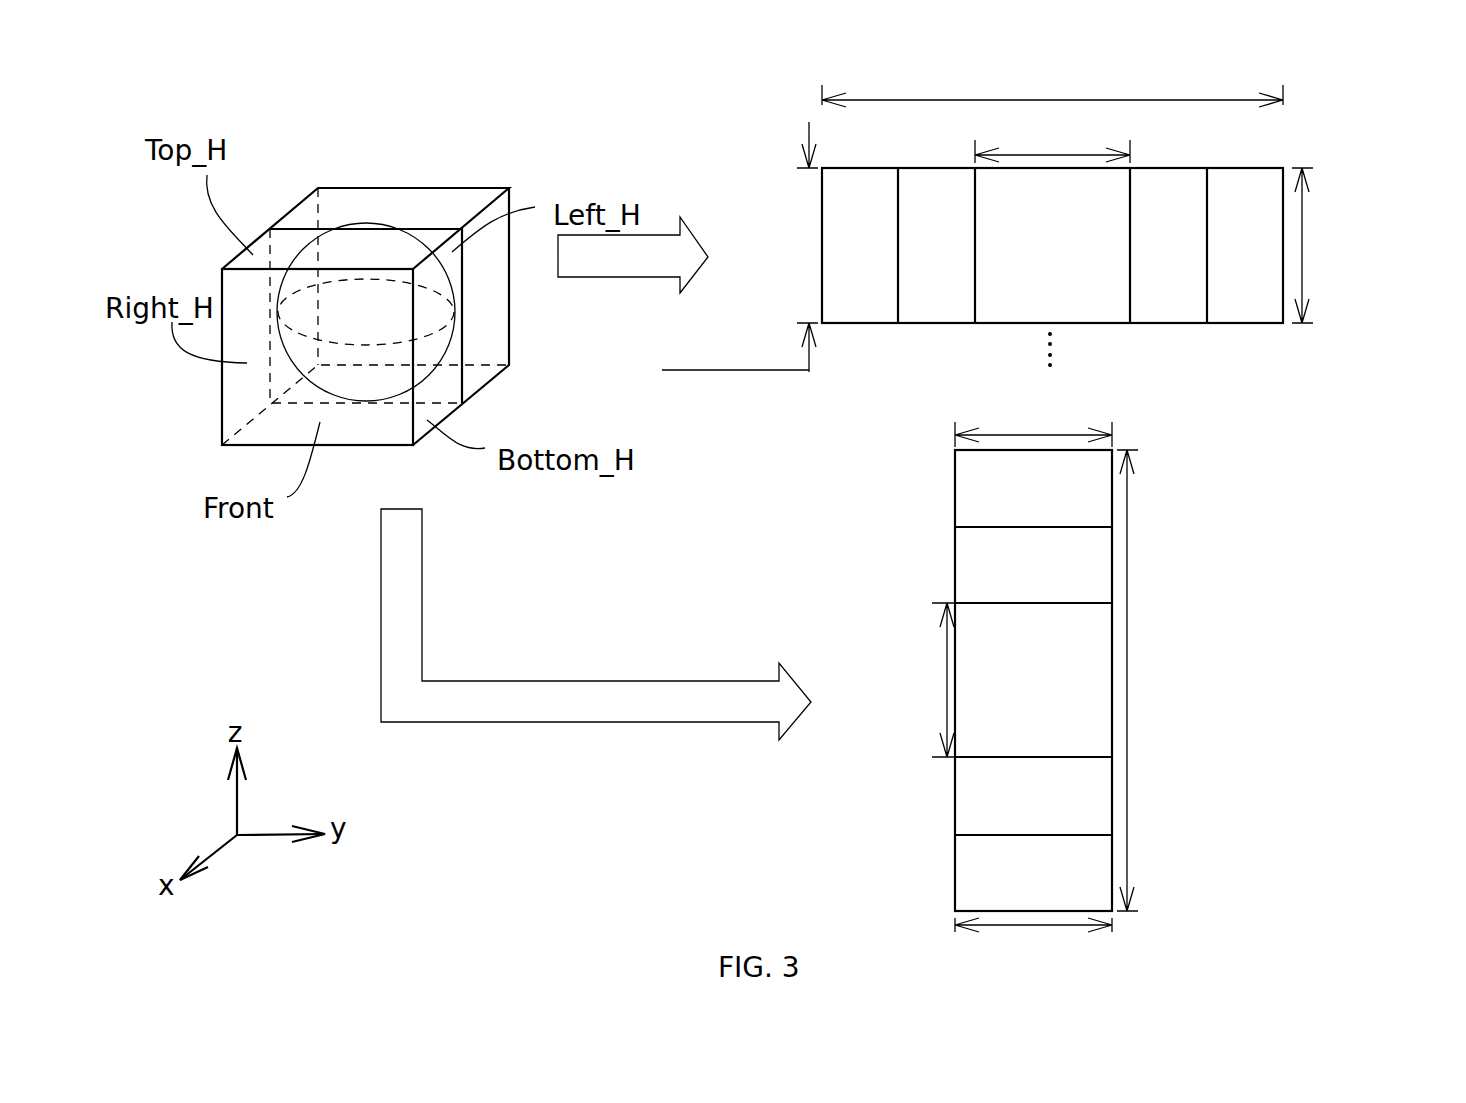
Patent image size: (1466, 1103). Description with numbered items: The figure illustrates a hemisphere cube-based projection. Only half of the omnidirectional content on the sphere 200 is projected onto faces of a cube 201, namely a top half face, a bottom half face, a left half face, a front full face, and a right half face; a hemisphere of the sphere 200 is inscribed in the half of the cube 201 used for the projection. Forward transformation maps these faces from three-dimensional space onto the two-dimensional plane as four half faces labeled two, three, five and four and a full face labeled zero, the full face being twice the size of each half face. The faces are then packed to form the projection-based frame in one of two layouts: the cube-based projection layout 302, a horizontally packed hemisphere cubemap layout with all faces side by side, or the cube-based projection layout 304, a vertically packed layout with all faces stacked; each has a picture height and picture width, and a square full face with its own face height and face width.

The sphere 200 is at (367, 222).
The cube 201 is at (413, 447).
The cube-based projection layout 302 is at (1330, 145).
The cube-based projection layout 304 is at (1243, 538).